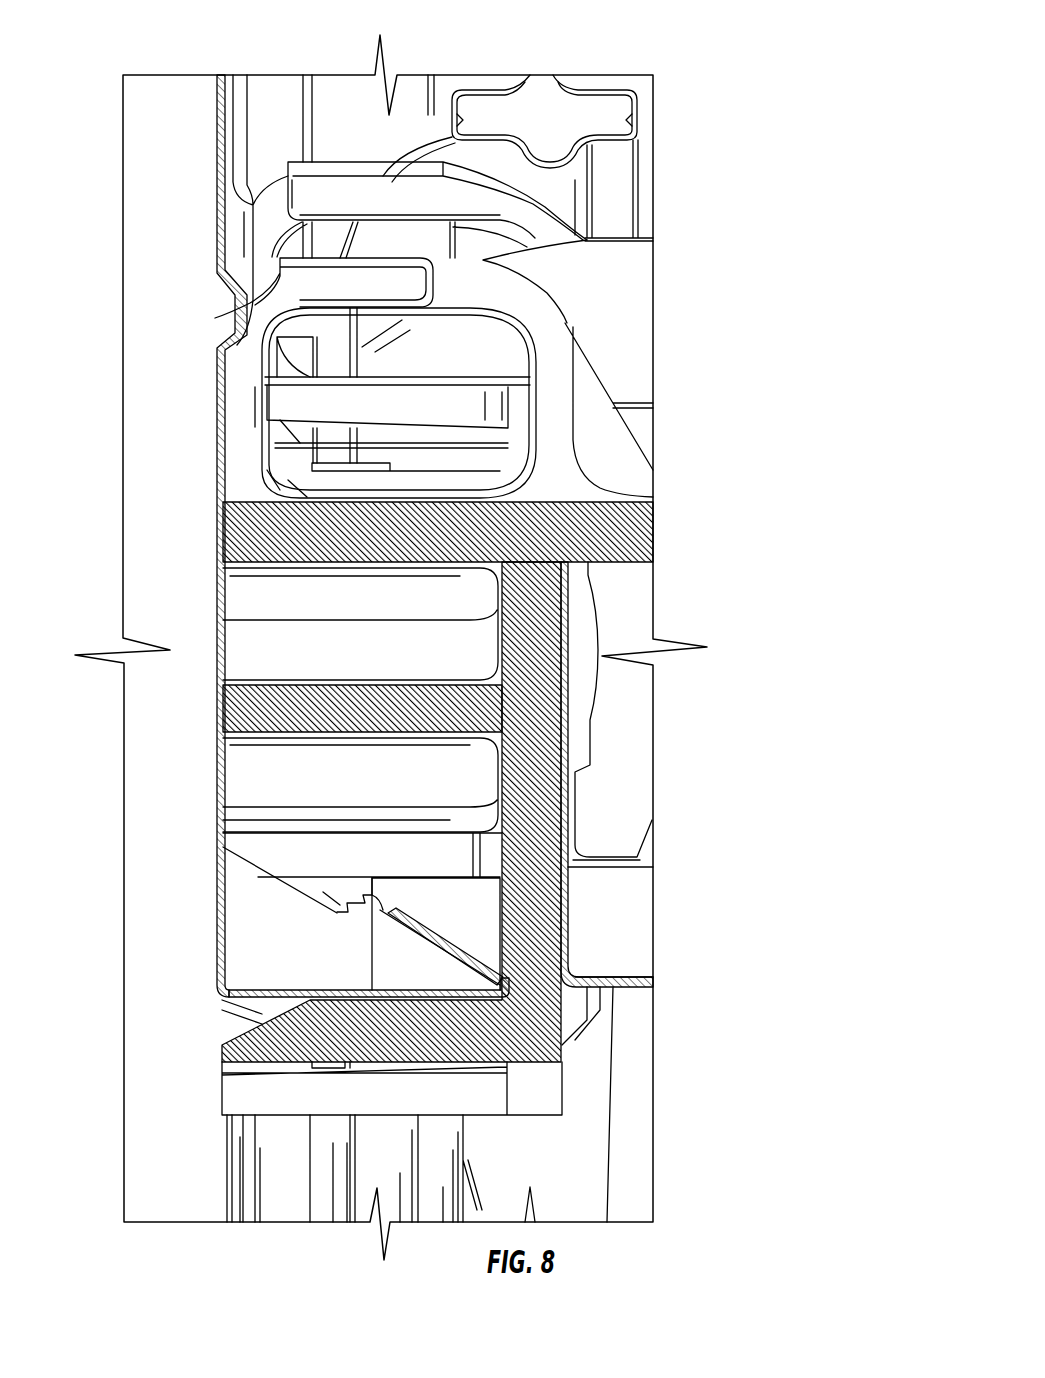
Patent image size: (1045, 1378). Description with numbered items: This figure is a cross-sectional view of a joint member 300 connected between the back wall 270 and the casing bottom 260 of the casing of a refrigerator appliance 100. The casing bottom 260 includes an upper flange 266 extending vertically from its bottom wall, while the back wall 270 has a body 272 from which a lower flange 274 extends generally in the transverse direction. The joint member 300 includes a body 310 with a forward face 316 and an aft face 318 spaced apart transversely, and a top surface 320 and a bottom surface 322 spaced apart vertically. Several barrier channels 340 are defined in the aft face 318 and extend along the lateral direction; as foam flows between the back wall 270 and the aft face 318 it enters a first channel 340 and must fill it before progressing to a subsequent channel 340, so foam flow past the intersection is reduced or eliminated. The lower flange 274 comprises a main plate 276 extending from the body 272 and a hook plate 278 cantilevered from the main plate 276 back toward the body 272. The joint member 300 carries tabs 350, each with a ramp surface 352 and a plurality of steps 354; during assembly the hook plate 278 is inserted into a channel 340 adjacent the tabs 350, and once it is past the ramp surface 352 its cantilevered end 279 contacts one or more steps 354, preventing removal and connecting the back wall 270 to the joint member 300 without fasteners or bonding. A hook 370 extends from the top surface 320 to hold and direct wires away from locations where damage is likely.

The refrigerator appliance 100 is at (694, 100).
The back wall 270 is at (203, 185).
The body 272 is at (217, 268).
The hook 370 is at (301, 289).
The top surface 320 is at (538, 498).
The aft face 318 is at (222, 524).
The body 310 is at (582, 538).
The barrier channel 340 is at (276, 638).
The joint member 300 is at (578, 615).
The forward face 316 is at (563, 702).
The upper flange 266 is at (565, 826).
The casing bottom 260 is at (622, 979).
The tab 350 is at (296, 886).
The ramp surface 352 is at (318, 898).
The cantilevered end 279 is at (380, 906).
The hook plate 278 is at (447, 951).
The step 354 is at (362, 914).
The main plate 276 is at (276, 992).
The lower flange 274 is at (257, 1010).
The bottom surface 322 is at (388, 1062).